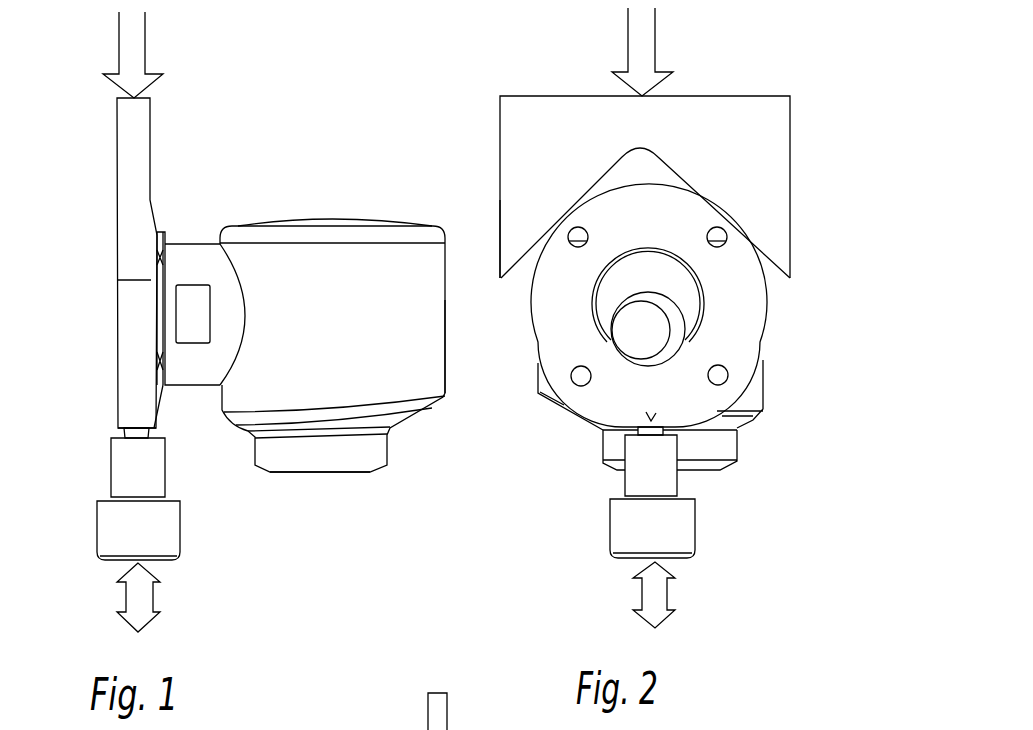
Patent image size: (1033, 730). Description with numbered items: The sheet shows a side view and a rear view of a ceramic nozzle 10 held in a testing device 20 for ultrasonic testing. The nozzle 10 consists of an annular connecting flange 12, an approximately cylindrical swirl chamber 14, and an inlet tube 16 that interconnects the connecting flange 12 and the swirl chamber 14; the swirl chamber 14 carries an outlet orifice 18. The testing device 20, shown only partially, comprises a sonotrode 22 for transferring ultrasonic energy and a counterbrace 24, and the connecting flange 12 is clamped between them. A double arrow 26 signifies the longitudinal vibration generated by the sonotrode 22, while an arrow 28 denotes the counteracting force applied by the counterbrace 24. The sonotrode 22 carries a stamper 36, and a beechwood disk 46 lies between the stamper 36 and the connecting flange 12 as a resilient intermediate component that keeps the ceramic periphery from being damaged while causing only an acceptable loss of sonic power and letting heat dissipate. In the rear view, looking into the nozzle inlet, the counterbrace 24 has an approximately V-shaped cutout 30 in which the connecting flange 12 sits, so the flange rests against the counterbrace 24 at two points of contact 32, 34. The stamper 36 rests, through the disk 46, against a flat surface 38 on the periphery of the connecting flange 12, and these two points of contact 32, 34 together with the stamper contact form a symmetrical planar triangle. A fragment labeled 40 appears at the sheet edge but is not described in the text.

In FIG. 1, the nozzle 10 is at (338, 190).
In FIG. 2, the nozzle 10 is at (797, 377).
In FIG. 1, the connecting flange 12 is at (132, 317).
In FIG. 2, the connecting flange 12 is at (757, 322).
In FIG. 1, the swirl chamber 14 is at (423, 370).
In FIG. 1, the inlet tube 16 is at (192, 257).
In FIG. 1, the outlet orifice 18 is at (343, 492).
In FIG. 1, the testing device 20 is at (196, 104).
In FIG. 2, the testing device 20 is at (738, 34).
In FIG. 1, the sonotrode 22 is at (165, 530).
In FIG. 2, the sonotrode 22 is at (682, 538).
In FIG. 1, the counterbrace 24 is at (131, 151).
In FIG. 2, the counterbrace 24 is at (537, 113).
In FIG. 1, the double arrow 26 is at (142, 598).
In FIG. 1, the arrow 28 is at (136, 37).
In FIG. 2, the arrow 28 is at (642, 52).
In FIG. 2, the V-shaped cutout 30 is at (705, 171).
In FIG. 2, the point of contact 32 is at (736, 217).
In FIG. 2, the point of contact 34 is at (562, 220).
In FIG. 1, the stamper 36 is at (148, 436).
In FIG. 2, the stamper 36 is at (663, 430).
In FIG. 2, the flat surface 38 is at (651, 421).
In FIG. 1, the gripper 40 is at (395, 729).
In FIG. 1, the disk 46 is at (122, 430).